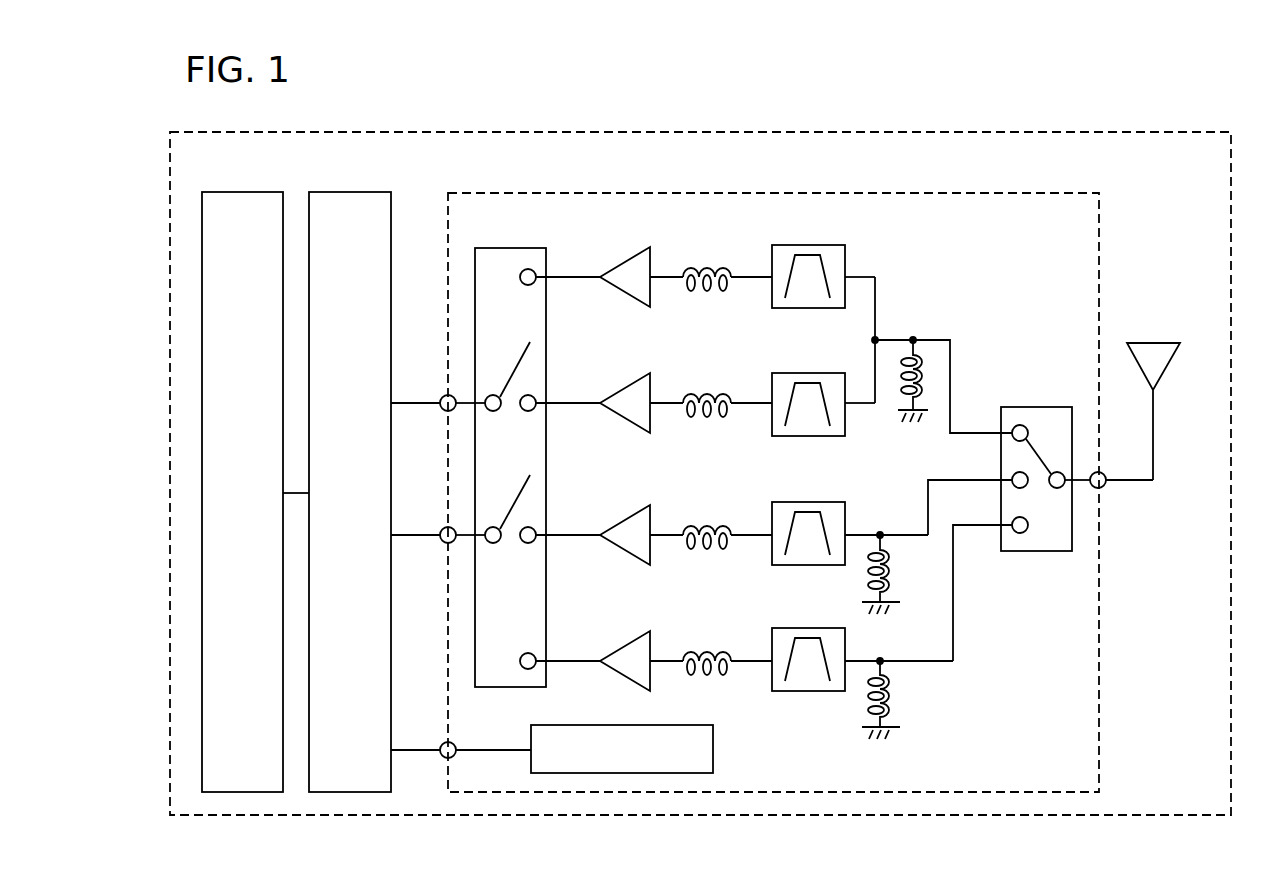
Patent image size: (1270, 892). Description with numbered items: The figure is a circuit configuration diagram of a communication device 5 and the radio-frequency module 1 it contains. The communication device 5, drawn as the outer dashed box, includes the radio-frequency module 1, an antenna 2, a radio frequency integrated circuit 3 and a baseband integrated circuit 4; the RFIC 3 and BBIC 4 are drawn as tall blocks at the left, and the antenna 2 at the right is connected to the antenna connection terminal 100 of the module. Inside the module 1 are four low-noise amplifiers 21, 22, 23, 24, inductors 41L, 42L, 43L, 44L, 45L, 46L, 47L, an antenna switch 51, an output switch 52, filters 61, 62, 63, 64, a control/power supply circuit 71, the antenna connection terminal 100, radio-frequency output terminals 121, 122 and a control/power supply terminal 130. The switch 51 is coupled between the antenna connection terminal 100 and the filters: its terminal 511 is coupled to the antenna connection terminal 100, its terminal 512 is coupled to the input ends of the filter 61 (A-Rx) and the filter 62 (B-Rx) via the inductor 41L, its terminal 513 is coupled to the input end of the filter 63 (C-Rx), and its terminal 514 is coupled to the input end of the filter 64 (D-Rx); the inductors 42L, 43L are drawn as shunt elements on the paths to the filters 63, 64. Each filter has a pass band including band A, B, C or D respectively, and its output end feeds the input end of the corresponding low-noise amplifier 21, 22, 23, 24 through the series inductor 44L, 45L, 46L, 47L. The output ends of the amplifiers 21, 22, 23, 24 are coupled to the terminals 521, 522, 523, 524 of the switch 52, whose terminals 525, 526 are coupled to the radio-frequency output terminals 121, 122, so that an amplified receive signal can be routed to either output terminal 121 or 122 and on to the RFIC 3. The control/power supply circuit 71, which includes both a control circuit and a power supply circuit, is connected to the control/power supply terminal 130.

The radio-frequency module 1 is at (990, 192).
The antenna 2 is at (1148, 343).
The radio frequency integrated circuit 3 is at (352, 192).
The baseband integrated circuit 4 is at (240, 192).
The communication device 5 is at (1160, 130).
The low-noise amplifier 21 is at (628, 260).
The low-noise amplifier 22 is at (628, 387).
The low-noise amplifier 23 is at (628, 518).
The low-noise amplifier 24 is at (628, 645).
The inductor 41L is at (925, 370).
The inductor 42L is at (892, 576).
The inductor 43L is at (892, 702).
The inductor 44L is at (698, 264).
The inductor 45L is at (698, 391).
The inductor 46L is at (698, 522).
The inductor 47L is at (698, 649).
The switch 51 is at (1030, 407).
The switch 52 is at (495, 248).
The filter 61 is at (797, 246).
The filter 62 is at (797, 374).
The filter 63 is at (797, 503).
The filter 64 is at (797, 629).
The control/power supply circuit 71 is at (660, 725).
The antenna connection terminal 100 is at (1106, 487).
The radio-frequency output terminal 121 is at (443, 411).
The radio-frequency output terminal 122 is at (443, 543).
The control/power supply terminal 130 is at (445, 758).
The terminal 511 is at (1064, 474).
The terminal 512 is at (1013, 438).
The terminal 513 is at (1013, 486).
The terminal 514 is at (1025, 533).
The terminal 521 is at (536, 272).
The terminal 522 is at (536, 398).
The terminal 523 is at (536, 530).
The terminal 524 is at (536, 656).
The terminal 525 is at (487, 397).
The terminal 526 is at (487, 529).